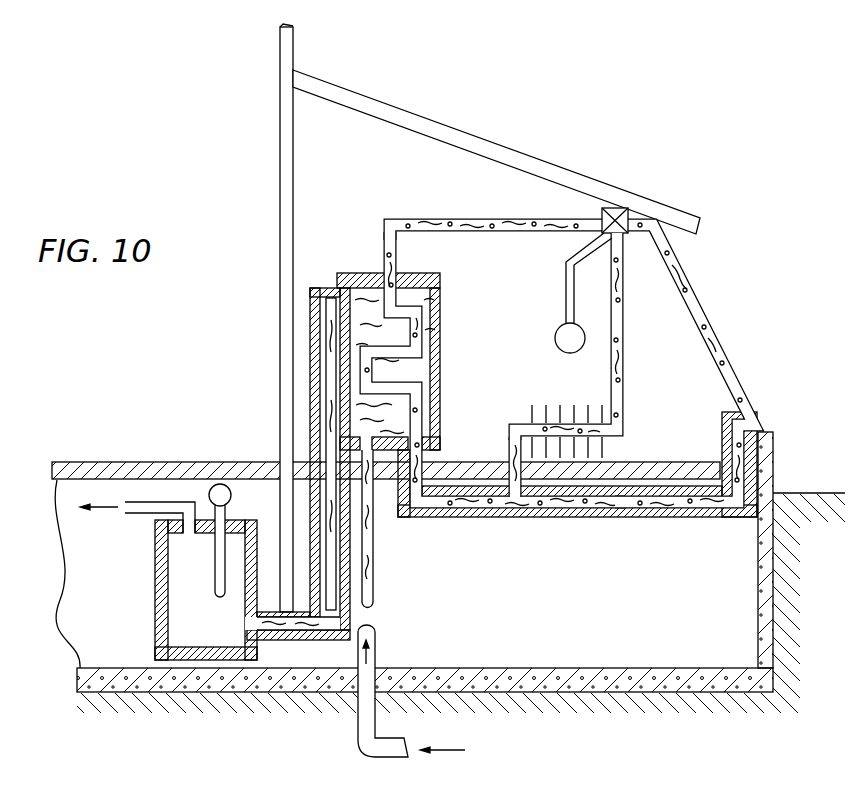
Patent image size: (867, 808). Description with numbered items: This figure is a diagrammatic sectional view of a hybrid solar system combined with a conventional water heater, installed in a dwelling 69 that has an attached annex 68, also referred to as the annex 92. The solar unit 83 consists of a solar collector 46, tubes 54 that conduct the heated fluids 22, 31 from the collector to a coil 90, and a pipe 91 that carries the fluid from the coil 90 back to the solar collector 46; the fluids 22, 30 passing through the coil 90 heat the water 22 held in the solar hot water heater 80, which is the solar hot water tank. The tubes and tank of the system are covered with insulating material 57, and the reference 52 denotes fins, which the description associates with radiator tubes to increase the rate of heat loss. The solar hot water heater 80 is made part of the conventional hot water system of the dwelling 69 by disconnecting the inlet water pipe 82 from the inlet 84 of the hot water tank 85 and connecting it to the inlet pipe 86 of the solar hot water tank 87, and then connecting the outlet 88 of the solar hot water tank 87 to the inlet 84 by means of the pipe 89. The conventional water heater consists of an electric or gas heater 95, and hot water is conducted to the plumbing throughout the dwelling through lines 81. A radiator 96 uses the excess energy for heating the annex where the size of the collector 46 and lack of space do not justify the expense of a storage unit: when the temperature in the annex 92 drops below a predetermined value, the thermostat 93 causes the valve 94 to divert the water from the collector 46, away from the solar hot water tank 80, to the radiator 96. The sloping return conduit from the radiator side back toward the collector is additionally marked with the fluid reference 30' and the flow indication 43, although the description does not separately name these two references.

The dwelling 69 is at (279, 128).
The annex 92 is at (496, 152).
The annex 68 is at (528, 112).
The solar unit 83 is at (566, 368).
The tube 54 is at (518, 207).
The valve 94 is at (614, 210).
The solar hot water heater 80 is at (432, 428).
The fins 52 is at (347, 272).
The outlet 88 is at (340, 288).
The pipe 89 is at (323, 340).
The insulating material 57 is at (310, 387).
The solar hot water tank 87 is at (432, 283).
The coil 90 is at (416, 322).
The heated fluid 22 is at (388, 371).
The thermostat 93 is at (555, 340).
The radiator 96 is at (568, 423).
The return conduit 30' is at (630, 393).
The solar collector 46 is at (630, 394).
The flow direction 43 is at (630, 393).
The fluid 30 is at (599, 394).
The lines 81 is at (140, 499).
The electric or gas heater 95 is at (220, 483).
The hot water tank 85 is at (252, 496).
The inlet 84 is at (325, 630).
The inlet pipe 86 is at (375, 593).
The inlet water pipe 82 is at (377, 636).
The pipe 91 is at (523, 519).
The heated fluid 31 is at (733, 519).